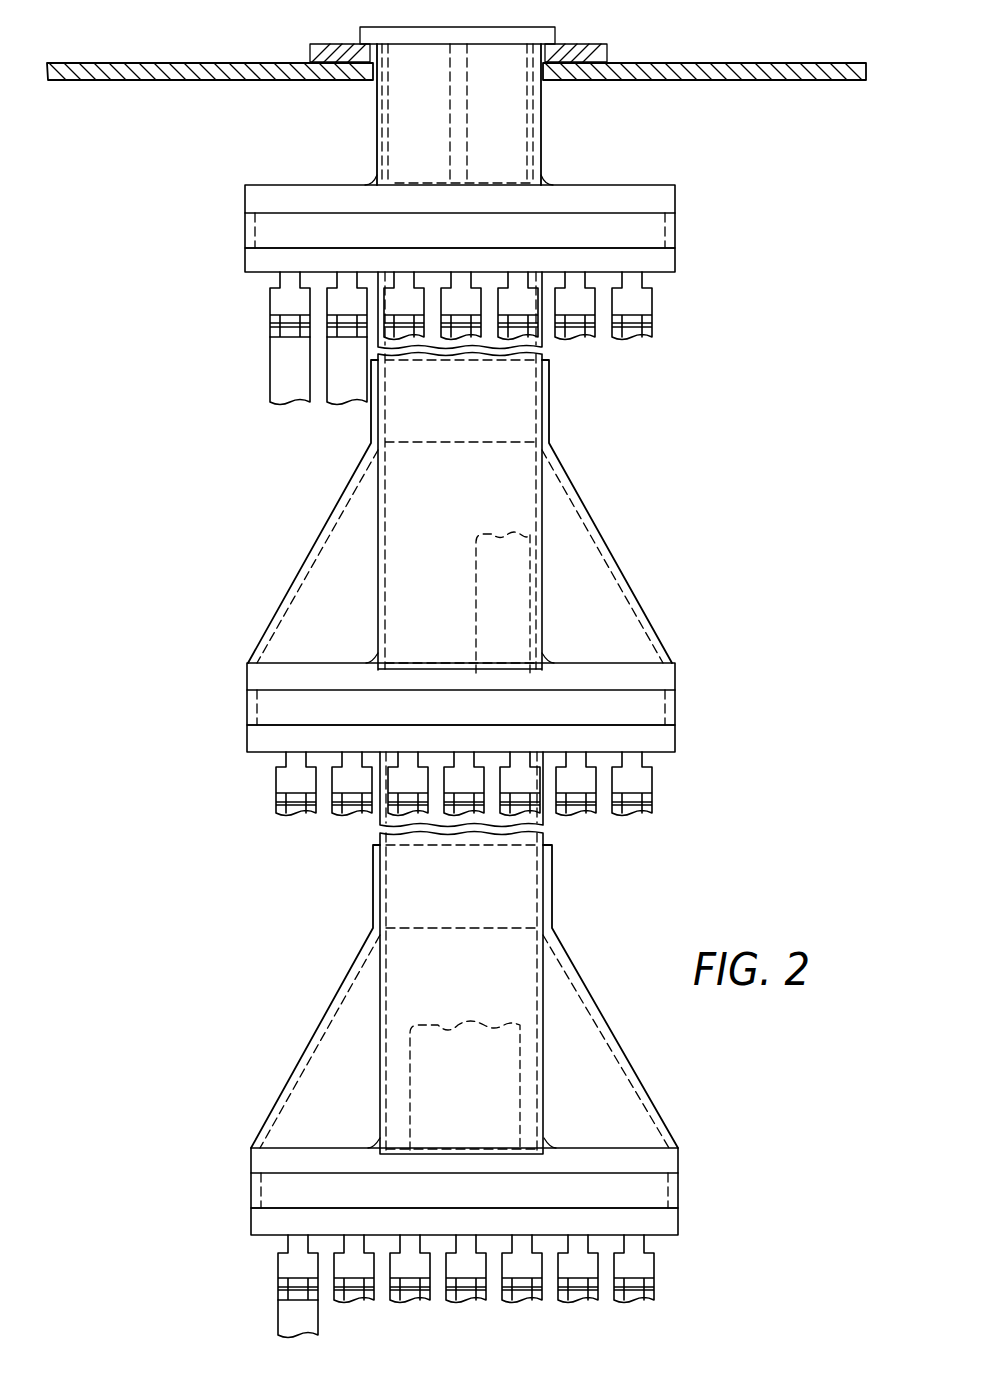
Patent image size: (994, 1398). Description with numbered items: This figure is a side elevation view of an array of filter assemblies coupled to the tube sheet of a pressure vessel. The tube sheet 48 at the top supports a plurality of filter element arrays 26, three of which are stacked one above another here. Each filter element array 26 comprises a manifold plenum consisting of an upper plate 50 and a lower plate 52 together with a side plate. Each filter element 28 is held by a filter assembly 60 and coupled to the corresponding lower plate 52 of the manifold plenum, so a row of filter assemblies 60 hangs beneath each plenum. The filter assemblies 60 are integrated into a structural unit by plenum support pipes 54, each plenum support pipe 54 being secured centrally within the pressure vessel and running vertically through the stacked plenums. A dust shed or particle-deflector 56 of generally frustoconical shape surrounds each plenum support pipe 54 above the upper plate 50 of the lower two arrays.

The filter element array 26 is at (168, 323).
The filter element 28 is at (272, 366).
The tube sheet 48 is at (656, 62).
The upper plate 50 is at (247, 201).
The lower plate 52 is at (247, 262).
The plenum support pipe 54 is at (542, 122).
The dust shed or particle-deflector 56 is at (312, 545).
The filter assembly 60 is at (270, 303).